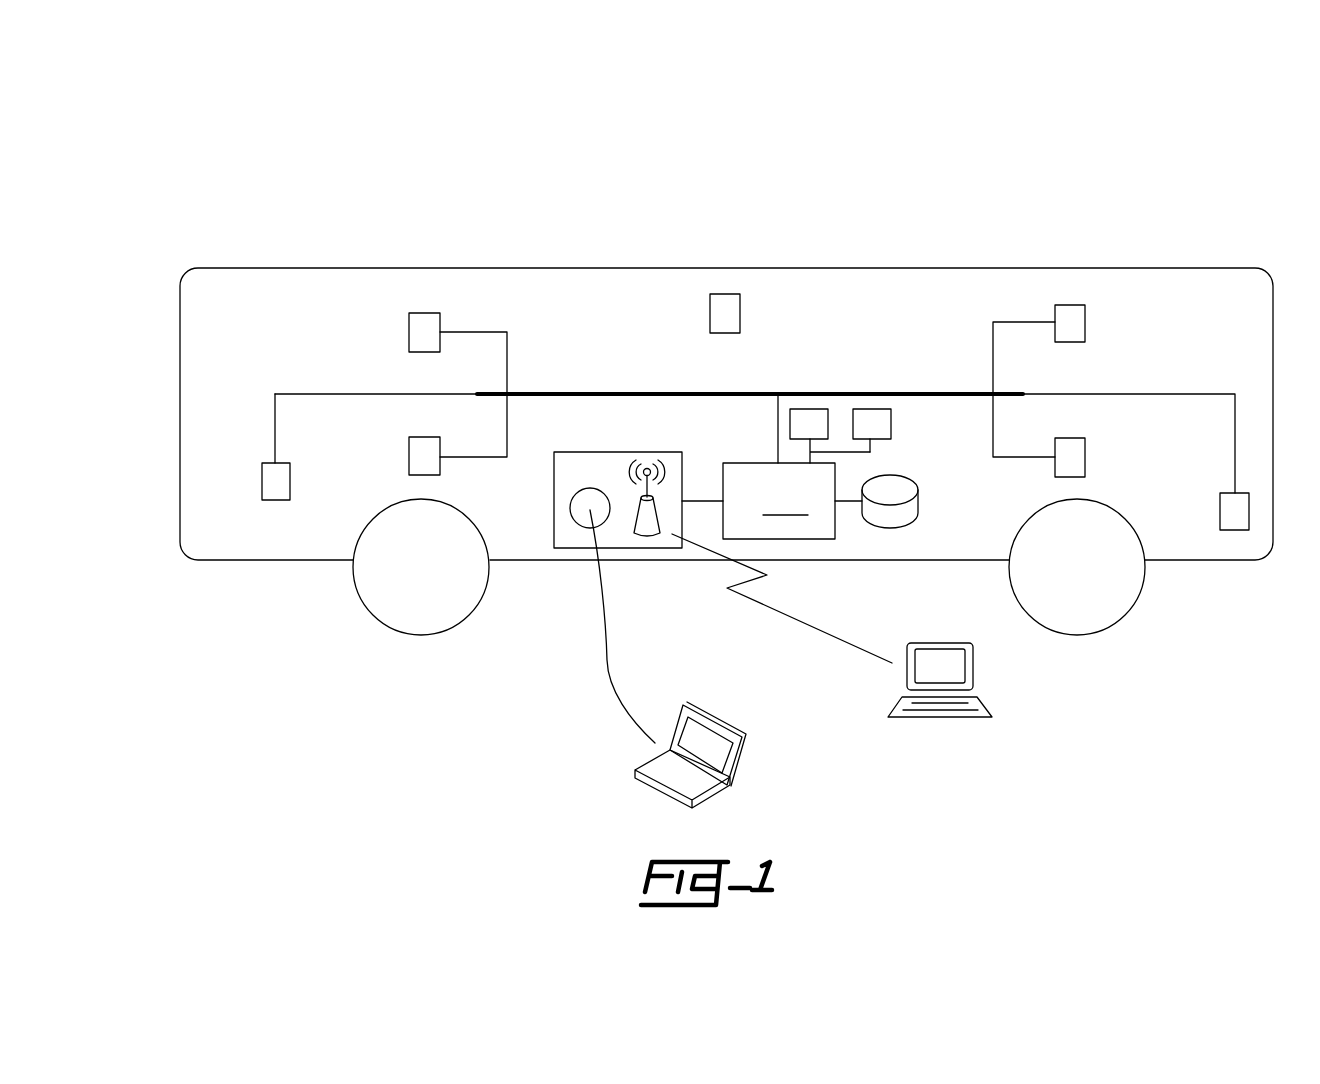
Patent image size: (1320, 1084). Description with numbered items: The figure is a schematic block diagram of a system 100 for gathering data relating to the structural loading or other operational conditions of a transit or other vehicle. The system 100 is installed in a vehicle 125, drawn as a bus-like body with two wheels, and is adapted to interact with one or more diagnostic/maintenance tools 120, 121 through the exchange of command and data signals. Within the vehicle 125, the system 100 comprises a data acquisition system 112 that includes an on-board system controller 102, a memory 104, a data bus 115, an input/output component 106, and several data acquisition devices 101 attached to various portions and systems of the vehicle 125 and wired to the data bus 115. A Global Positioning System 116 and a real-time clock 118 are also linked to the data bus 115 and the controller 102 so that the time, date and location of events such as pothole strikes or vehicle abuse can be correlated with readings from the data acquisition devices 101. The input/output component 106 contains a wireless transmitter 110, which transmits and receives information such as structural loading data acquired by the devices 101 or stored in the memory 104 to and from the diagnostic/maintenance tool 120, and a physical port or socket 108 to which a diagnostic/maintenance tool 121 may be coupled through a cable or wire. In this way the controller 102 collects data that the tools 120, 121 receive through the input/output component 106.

The system 100 is at (240, 177).
The data acquisition devices 101 is at (403, 340).
The on-board system controller 102 is at (772, 501).
The memory 104 is at (921, 480).
The input/output component 106 is at (684, 459).
The physical port or socket 108 is at (572, 523).
The wireless transmitter 110 is at (651, 536).
The data acquisition system 112 is at (1208, 333).
The data bus 115 is at (921, 382).
The Global Positioning System 116 is at (812, 407).
The real-time clock 118 is at (875, 407).
The diagnostic/maintenance tool 120 is at (748, 770).
The diagnostic/maintenance tool 121 is at (996, 701).
The vehicle 125 is at (143, 320).